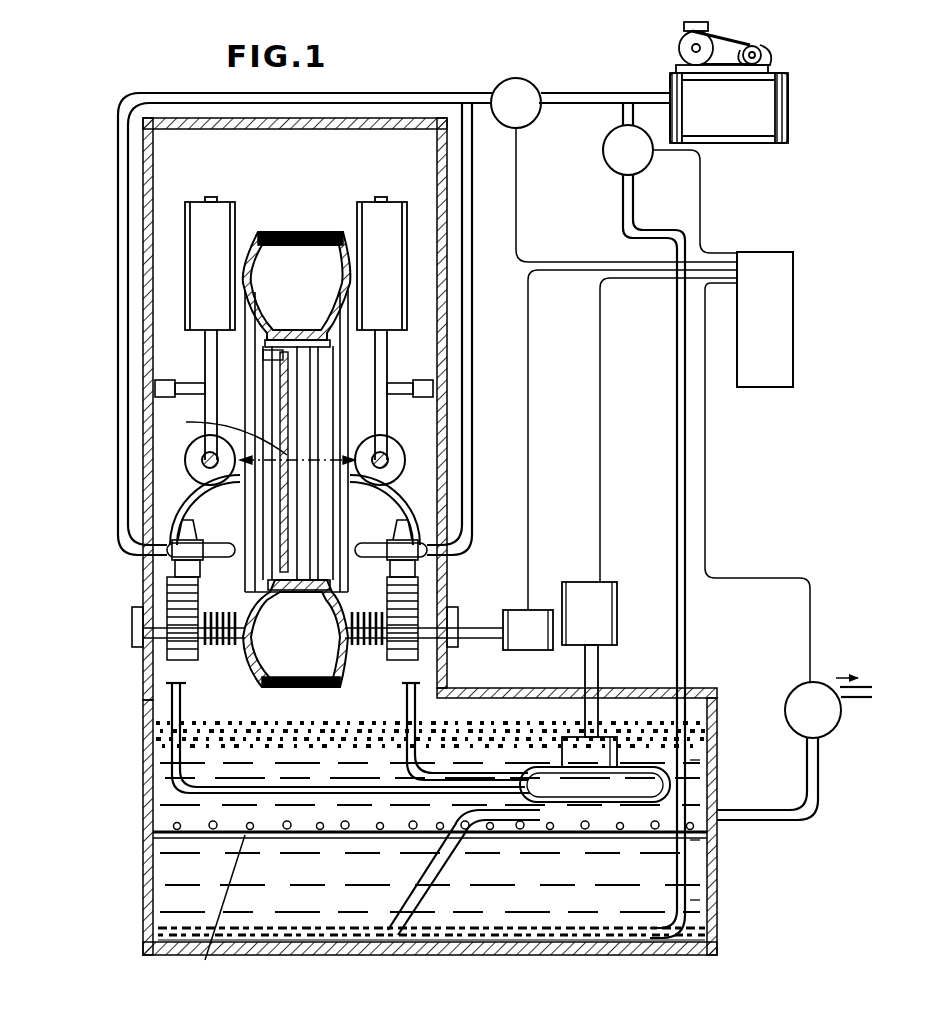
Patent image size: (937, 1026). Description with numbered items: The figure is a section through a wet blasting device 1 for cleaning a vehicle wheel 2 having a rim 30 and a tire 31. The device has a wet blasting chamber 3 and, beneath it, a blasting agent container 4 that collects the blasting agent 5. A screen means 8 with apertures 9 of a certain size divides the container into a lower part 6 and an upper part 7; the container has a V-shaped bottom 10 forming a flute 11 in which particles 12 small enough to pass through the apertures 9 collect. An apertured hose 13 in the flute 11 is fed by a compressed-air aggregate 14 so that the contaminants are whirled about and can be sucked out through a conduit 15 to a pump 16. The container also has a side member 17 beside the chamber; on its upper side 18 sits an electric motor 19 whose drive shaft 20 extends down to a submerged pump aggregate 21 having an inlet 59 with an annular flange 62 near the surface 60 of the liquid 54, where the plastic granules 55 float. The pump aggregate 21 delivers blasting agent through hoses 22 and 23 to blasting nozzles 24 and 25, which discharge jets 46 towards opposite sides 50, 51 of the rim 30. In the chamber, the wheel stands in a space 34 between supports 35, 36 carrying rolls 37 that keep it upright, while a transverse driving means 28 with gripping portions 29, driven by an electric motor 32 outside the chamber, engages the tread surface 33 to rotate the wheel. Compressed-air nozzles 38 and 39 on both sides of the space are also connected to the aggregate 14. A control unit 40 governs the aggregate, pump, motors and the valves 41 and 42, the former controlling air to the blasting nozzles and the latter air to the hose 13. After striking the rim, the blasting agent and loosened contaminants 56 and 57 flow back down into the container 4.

The wet blasting device 1 is at (500, 68).
The vehicle wheel 2 is at (305, 232).
The wet blasting chamber 3 is at (175, 275).
The blasting agent container 4 is at (700, 714).
The blasting agent 5 is at (185, 735).
The lower part 6 is at (165, 878).
The upper part 7 is at (175, 805).
The screen means 8 is at (180, 838).
The apertures 9 is at (165, 832).
The V-shaped bottom 10 is at (333, 955).
The flute 11 is at (270, 955).
The particles 12 is at (175, 898).
The apertured hose 13 is at (520, 952).
The compressed-air aggregate 14 is at (670, 56).
The conduit 15 is at (430, 935).
The pump 16 is at (807, 700).
The side member 17 is at (645, 688).
The upper side 18 is at (598, 688).
The electric motor 19 is at (614, 580).
The drive shaft 20 is at (598, 655).
The pump aggregate 21 is at (680, 782).
The hose 22 is at (468, 773).
The hose 23 is at (172, 690).
The blasting nozzle 24 is at (412, 496).
The blasting nozzle 25 is at (182, 488).
The driving means 28 is at (213, 650).
The gripping portions 29 is at (213, 608).
The rim 30 is at (330, 430).
The tire 31 is at (330, 235).
The electric motor 32 is at (538, 608).
The tread surface 33 is at (280, 680).
The space 34 is at (276, 215).
The support 35 is at (440, 335).
The support 36 is at (200, 345).
The rolls 37 is at (185, 228).
The compressed-air nozzle 38 is at (437, 571).
The compressed-air nozzle 39 is at (168, 556).
The control unit 40 is at (772, 250).
The valve 41 is at (526, 84).
The valve 42 is at (605, 156).
The jets of blasting agent 46 is at (218, 492).
The side of the rim 50 is at (290, 405).
The side of the rim 51 is at (275, 375).
The liquid 54 is at (695, 865).
The plastic granules 55 is at (220, 743).
The loosened contaminants 56 is at (215, 770).
The loosened contaminants 57 is at (212, 958).
The inlet 59 is at (703, 745).
The surface 60 is at (352, 720).
The annular flange 62 is at (617, 752).